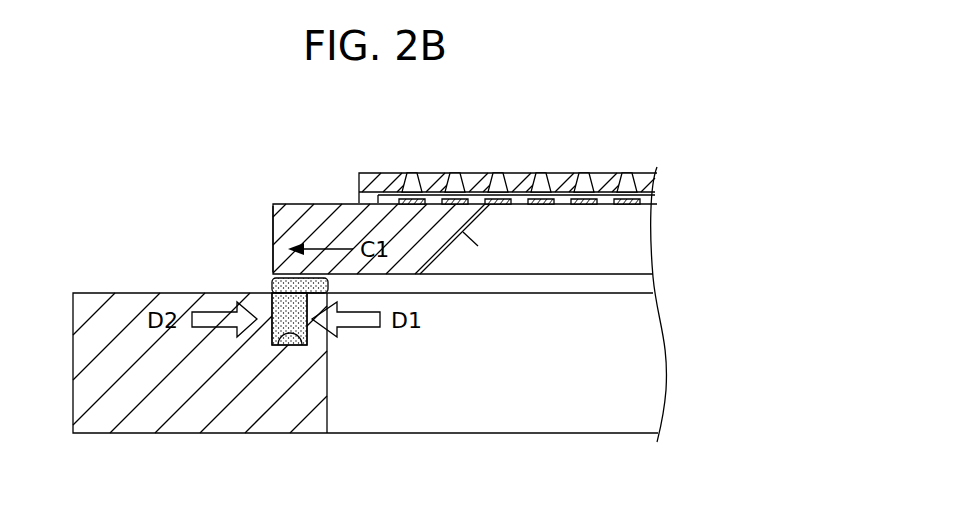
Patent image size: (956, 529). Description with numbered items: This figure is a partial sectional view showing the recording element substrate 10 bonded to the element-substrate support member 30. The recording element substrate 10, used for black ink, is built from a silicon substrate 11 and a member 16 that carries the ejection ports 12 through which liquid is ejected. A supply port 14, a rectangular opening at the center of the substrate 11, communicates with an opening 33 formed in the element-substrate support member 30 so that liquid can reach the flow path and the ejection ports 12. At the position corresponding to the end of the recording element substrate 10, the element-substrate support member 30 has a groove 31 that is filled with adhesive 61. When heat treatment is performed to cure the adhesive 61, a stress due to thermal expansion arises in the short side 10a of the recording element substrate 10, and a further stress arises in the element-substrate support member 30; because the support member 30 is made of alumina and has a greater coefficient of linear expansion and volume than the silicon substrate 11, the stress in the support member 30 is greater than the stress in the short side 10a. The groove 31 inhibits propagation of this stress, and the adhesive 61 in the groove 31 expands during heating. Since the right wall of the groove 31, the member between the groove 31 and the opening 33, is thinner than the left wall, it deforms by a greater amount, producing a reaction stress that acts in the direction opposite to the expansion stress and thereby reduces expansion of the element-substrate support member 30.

The recording element substrate 10 is at (433, 300).
The short side 10a is at (272, 233).
The substrate 11 is at (293, 213).
The ejection ports 12 is at (623, 190).
The supply port 14 is at (463, 232).
The member 16 is at (390, 178).
The element-substrate support member 30 is at (126, 245).
The groove 31 is at (275, 347).
The opening 33 is at (327, 368).
The adhesive 61 is at (272, 283).